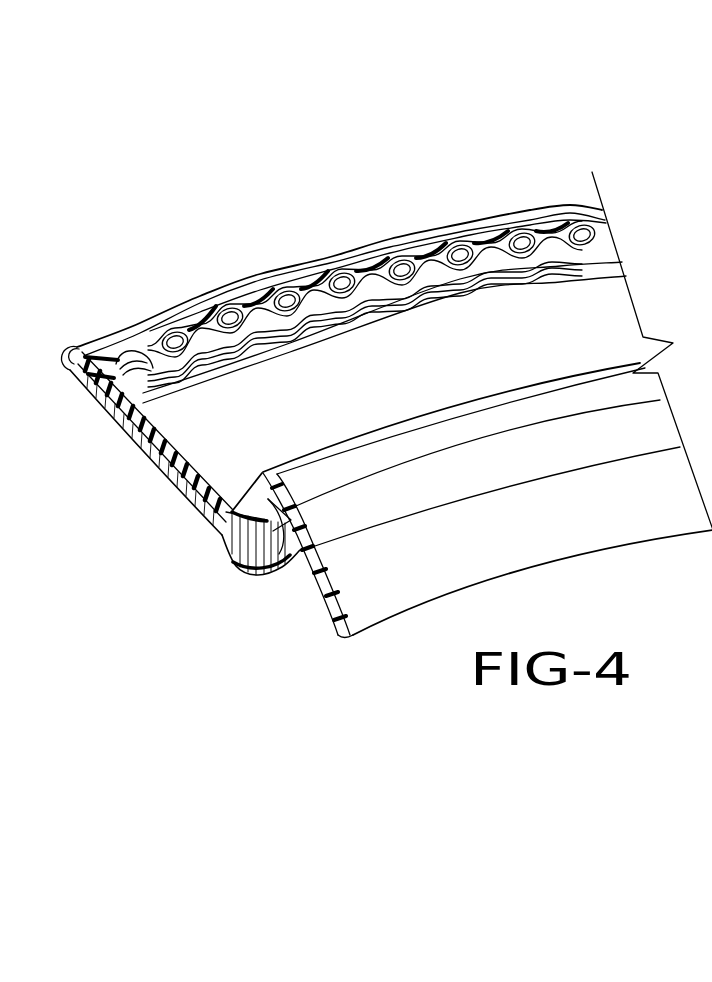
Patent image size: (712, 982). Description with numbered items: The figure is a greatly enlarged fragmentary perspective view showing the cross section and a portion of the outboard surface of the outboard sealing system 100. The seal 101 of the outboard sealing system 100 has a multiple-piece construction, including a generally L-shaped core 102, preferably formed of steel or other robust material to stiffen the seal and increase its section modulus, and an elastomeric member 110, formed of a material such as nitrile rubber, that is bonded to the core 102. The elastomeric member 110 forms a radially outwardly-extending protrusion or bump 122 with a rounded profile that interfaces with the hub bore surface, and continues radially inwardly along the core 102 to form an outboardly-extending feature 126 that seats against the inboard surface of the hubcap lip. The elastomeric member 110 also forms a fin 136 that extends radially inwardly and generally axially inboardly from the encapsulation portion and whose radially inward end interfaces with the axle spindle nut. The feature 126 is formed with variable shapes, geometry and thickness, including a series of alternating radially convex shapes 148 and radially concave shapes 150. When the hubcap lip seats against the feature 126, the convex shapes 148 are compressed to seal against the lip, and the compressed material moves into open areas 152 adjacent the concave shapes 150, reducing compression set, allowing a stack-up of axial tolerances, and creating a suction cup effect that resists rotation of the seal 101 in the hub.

The outboard sealing system 100 is at (256, 126).
The seal 101 is at (117, 446).
The core 102 is at (153, 470).
The elastomeric member 110 is at (160, 440).
The protrusion 122 is at (75, 355).
The outboardly-extending feature 126 is at (330, 273).
The fin 136 is at (327, 587).
The radially convex shapes 148 is at (388, 258).
The radially concave shapes 150 is at (547, 235).
The open areas 152 is at (477, 242).